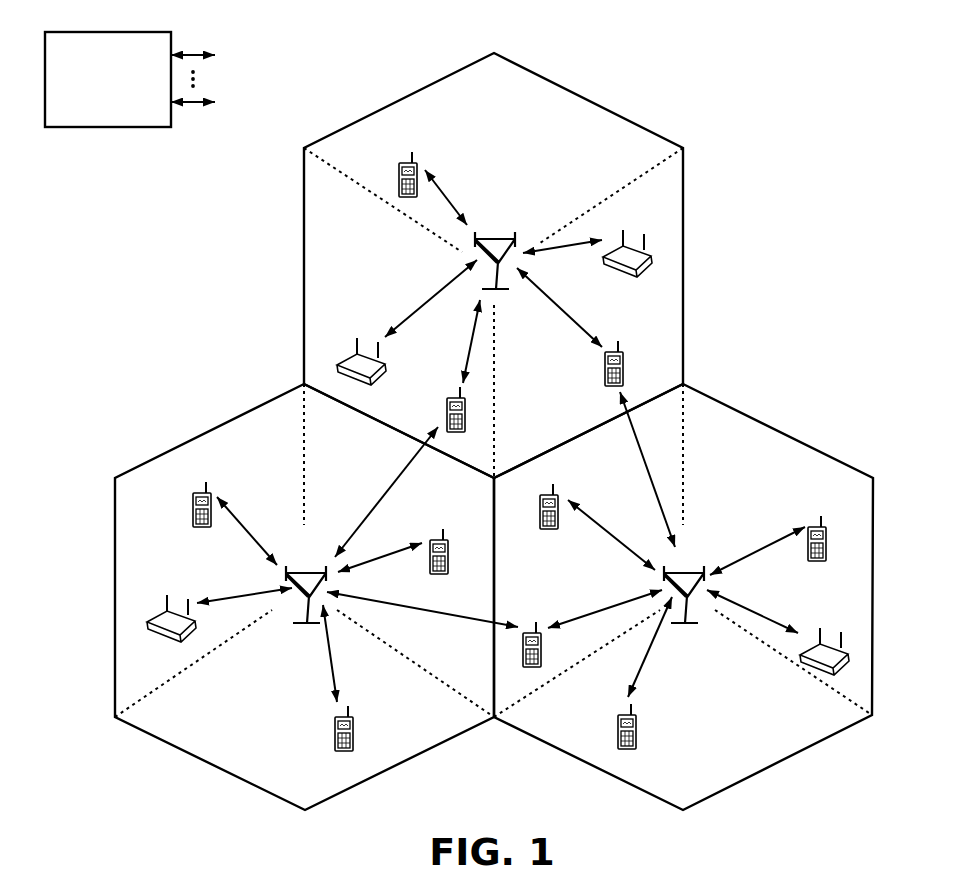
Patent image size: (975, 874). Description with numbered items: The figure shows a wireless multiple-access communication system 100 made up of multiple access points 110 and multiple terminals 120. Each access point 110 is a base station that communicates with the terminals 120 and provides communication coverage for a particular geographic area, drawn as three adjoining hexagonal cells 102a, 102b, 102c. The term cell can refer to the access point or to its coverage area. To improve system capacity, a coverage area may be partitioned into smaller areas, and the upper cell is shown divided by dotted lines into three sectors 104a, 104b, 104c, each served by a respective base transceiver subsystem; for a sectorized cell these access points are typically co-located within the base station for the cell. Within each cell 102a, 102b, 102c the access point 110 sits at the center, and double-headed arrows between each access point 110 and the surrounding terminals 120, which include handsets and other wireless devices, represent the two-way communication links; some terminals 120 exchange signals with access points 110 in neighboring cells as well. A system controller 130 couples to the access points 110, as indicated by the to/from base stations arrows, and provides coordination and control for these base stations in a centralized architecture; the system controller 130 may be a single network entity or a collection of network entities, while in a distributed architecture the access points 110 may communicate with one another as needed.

The wireless communication system 100 is at (820, 108).
The geographic area 102a is at (598, 87).
The geographic area 102b is at (210, 430).
The geographic area 102c is at (783, 431).
The smaller area 104a is at (493, 171).
The smaller area 104b is at (304, 470).
The smaller area 104c is at (604, 550).
The access point 110 is at (491, 238).
The terminal 120 is at (398, 171).
The system controller 130 is at (103, 32).